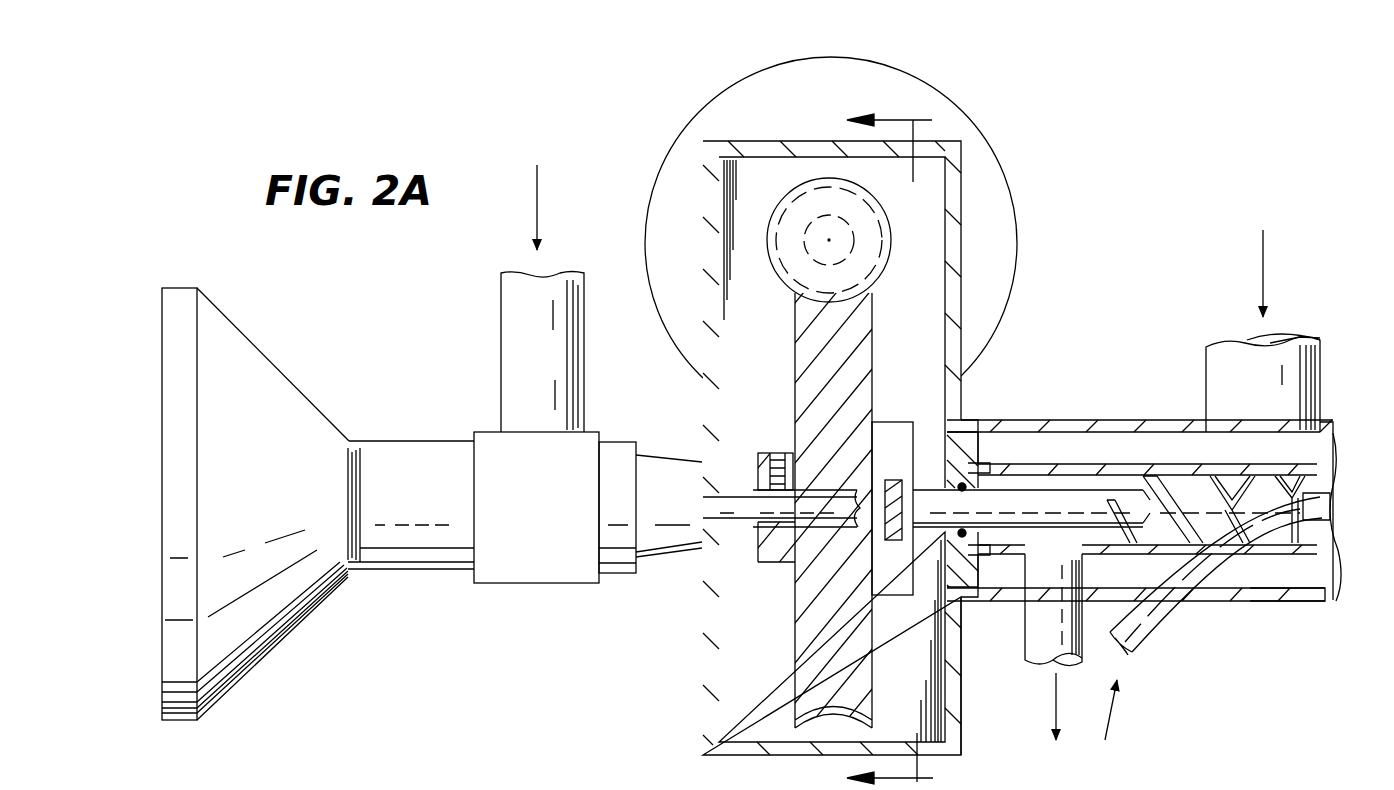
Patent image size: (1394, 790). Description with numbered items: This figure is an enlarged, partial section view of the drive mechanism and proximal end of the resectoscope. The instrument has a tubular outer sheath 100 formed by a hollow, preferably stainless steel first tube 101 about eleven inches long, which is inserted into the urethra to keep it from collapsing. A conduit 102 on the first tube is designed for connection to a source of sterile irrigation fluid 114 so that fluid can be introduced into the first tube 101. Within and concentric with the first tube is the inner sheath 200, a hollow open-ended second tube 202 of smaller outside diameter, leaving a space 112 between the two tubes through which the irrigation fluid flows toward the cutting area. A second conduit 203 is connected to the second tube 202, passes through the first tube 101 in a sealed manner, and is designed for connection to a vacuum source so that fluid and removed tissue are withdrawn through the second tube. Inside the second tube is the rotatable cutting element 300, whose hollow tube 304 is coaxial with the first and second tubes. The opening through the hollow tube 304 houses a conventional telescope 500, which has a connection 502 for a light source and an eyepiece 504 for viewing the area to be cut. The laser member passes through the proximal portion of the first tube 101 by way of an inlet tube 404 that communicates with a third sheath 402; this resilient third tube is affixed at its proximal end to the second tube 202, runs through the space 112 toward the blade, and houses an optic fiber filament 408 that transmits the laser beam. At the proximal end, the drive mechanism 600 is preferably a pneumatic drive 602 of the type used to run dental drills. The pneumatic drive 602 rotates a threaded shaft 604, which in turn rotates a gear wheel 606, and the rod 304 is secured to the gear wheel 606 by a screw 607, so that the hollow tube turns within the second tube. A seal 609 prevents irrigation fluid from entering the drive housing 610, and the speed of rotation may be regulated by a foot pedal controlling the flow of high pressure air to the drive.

The outer sheath 100 is at (1112, 412).
The first tube 101 is at (1187, 388).
The conduit 102 is at (1208, 348).
The space 112 is at (1283, 577).
The irrigation fluid 114 is at (1263, 263).
The inner sheath 200 is at (1049, 460).
The second tube 202 is at (1018, 460).
The second conduit 203 is at (1017, 637).
The cutting element 300 is at (1292, 478).
The hollow tube 304 is at (997, 520).
The third sheath 402 is at (1192, 557).
The inlet tube 404 is at (1163, 613).
The optic fiber filament 408 is at (1340, 537).
The telescope 500 is at (452, 583).
The connection 502 is at (501, 288).
The eyepiece 504 is at (262, 352).
The drive mechanism 600 is at (697, 665).
The pneumatic drive 602 is at (970, 120).
The threaded shaft 604 is at (772, 267).
The gear wheel 606 is at (807, 703).
The screw 607 is at (775, 453).
The seal 609 is at (945, 482).
The drive housing 610 is at (963, 718).